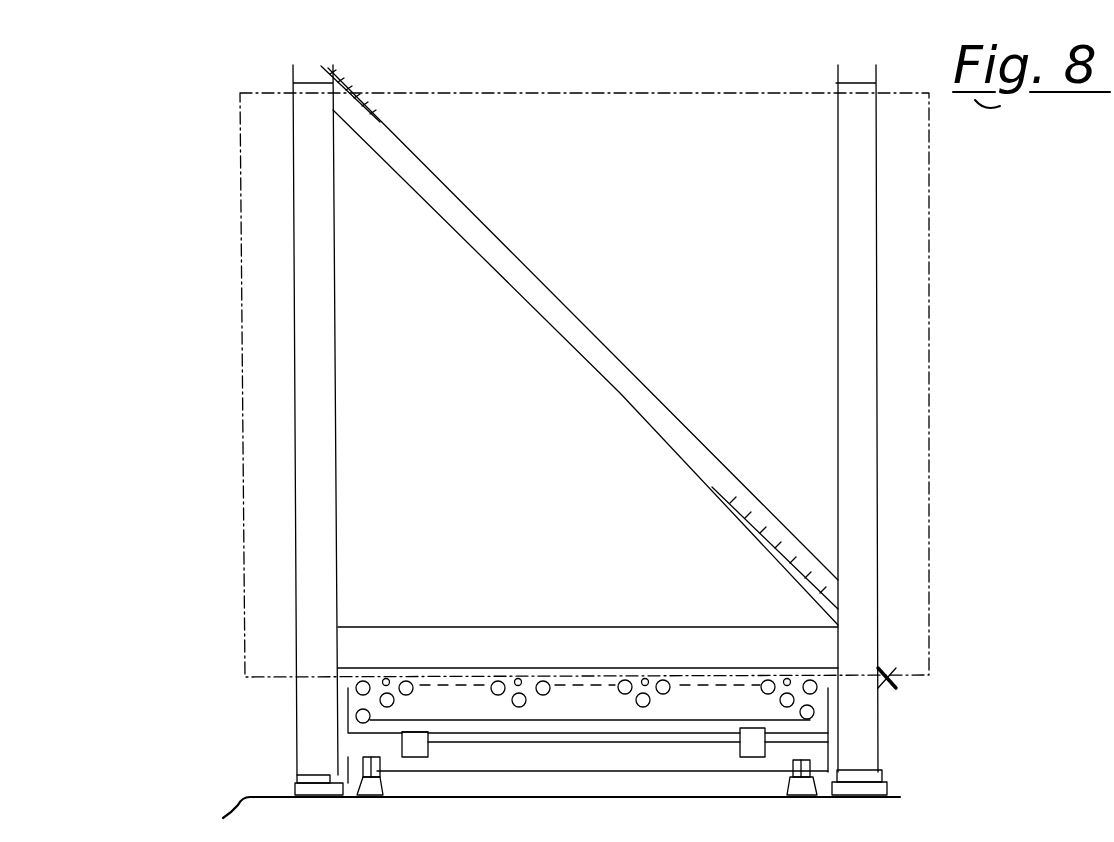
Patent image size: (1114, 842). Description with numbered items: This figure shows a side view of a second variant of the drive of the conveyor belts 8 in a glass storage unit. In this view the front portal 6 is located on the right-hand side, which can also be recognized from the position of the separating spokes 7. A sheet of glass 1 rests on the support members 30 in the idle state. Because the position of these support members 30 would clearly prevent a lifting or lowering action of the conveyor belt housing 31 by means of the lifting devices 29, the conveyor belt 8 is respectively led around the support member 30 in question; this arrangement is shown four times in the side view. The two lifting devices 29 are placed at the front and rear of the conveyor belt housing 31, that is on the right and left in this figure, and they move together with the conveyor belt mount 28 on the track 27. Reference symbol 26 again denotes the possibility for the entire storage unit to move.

The sheet of glass 1 is at (242, 312).
The front portal 6 is at (855, 392).
The separating spokes 7 is at (880, 675).
The conveyor belt 8 is at (597, 677).
The movement possibility of the storage unit 26 is at (884, 776).
The track 27 is at (343, 779).
The conveyor belt mount 28 is at (378, 755).
The lifting devices 29 is at (405, 738).
The support members 30 is at (517, 678).
The conveyor belt housing 31 is at (828, 710).